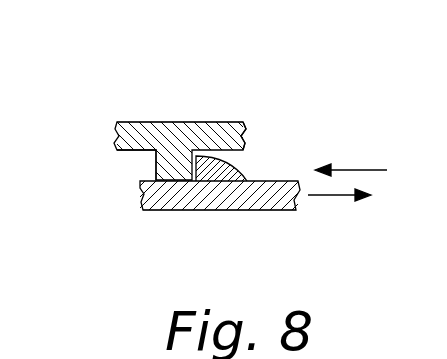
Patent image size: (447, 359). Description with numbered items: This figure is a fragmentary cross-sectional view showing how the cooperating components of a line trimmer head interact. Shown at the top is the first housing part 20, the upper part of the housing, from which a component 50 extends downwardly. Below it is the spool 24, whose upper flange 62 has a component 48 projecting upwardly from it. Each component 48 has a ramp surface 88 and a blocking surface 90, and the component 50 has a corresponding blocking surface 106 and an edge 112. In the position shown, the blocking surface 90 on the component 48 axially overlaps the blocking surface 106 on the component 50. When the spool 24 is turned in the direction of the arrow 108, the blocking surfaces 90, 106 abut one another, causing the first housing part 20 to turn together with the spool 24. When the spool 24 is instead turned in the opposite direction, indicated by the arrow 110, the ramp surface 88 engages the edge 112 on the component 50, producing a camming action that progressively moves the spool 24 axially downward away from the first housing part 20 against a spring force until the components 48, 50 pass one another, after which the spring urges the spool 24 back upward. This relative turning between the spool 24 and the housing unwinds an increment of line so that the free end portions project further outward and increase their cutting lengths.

The first housing part 20 is at (143, 122).
The blocking surface 106 is at (242, 122).
The ramp surface 88 is at (243, 146).
The component 50 is at (156, 162).
The edge 112 is at (140, 183).
The component 48 is at (236, 167).
The blocking surface 90 is at (146, 210).
The upper flange 62 is at (197, 211).
The spool 24 is at (258, 211).
The arrow 108 is at (358, 168).
The arrow 110 is at (342, 197).